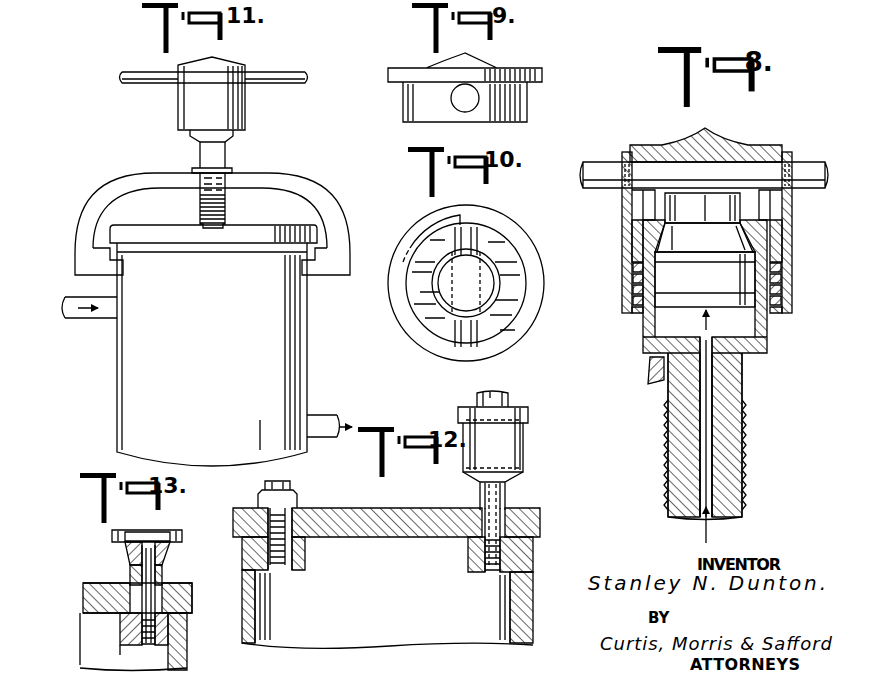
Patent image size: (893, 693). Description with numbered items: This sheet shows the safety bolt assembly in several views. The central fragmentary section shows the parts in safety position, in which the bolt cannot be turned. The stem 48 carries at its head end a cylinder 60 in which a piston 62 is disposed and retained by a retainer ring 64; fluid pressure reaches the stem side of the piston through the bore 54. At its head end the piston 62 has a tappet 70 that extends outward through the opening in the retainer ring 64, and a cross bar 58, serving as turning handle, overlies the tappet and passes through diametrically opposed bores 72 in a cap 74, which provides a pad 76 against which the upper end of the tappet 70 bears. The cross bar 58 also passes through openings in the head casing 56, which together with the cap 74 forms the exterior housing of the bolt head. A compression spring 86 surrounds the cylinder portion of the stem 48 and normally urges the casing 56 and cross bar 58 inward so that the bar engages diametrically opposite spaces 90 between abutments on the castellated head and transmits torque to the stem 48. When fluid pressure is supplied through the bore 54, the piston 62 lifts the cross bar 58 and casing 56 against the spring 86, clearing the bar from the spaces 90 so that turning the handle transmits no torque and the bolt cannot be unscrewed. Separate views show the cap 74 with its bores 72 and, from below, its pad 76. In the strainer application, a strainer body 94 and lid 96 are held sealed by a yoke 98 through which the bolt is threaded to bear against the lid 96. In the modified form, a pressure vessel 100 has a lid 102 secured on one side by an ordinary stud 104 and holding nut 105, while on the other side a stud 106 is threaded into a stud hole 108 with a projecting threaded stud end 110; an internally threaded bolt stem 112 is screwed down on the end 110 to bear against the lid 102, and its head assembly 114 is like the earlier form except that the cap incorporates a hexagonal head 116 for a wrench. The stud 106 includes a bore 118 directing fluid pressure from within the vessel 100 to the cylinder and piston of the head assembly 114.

In FIG. 11, the stem 48 is at (198, 150).
In FIG. 8, the stem 48 is at (742, 462).
In FIG. 8, the bore 54 is at (712, 489).
In FIG. 11, the head casing 56 is at (176, 108).
In FIG. 8, the head casing 56 is at (798, 138).
In FIG. 11, the cross bar 58 is at (120, 78).
In FIG. 8, the cross bar 58 is at (594, 189).
In FIG. 8, the cylinder 60 is at (740, 340).
In FIG. 8, the piston 62 is at (735, 313).
In FIG. 8, the retainer ring 64 is at (758, 246).
In FIG. 8, the tappet 70 is at (735, 218).
In FIG. 9, the bores 72 is at (452, 94).
In FIG. 10, the bores 72 is at (452, 287).
In FIG. 9, the cap 74 is at (440, 67).
In FIG. 10, the cap 74 is at (436, 214).
In FIG. 10, the pad 76 is at (487, 295).
In FIG. 8, the compression spring 86 is at (630, 284).
In FIG. 8, the spaces 90 is at (636, 214).
In FIG. 11, the strainer body 94 is at (115, 374).
In FIG. 11, the lid 96 is at (138, 226).
In FIG. 11, the yoke 98 is at (113, 190).
In FIG. 12, the pressure vessel 100 is at (397, 620).
In FIG. 13, the pressure vessel 100 is at (190, 661).
In FIG. 12, the lid 102 is at (377, 507).
In FIG. 13, the lid 102 is at (192, 606).
In FIG. 12, the stud 104 is at (285, 523).
In FIG. 12, the holding nut 105 is at (284, 500).
In FIG. 12, the stud 106 is at (522, 527).
In FIG. 13, the stud 106 is at (184, 598).
In FIG. 12, the stud hole 108 is at (503, 562).
In FIG. 13, the stud hole 108 is at (130, 648).
In FIG. 12, the threaded stud end 110 is at (505, 497).
In FIG. 13, the threaded stud end 110 is at (130, 574).
In FIG. 12, the bolt stem 112 is at (508, 492).
In FIG. 13, the bolt stem 112 is at (128, 553).
In FIG. 12, the head assembly 114 is at (527, 463).
In FIG. 13, the head assembly 114 is at (110, 535).
In FIG. 12, the hexagonal head 116 is at (510, 400).
In FIG. 13, the bore 118 is at (128, 622).